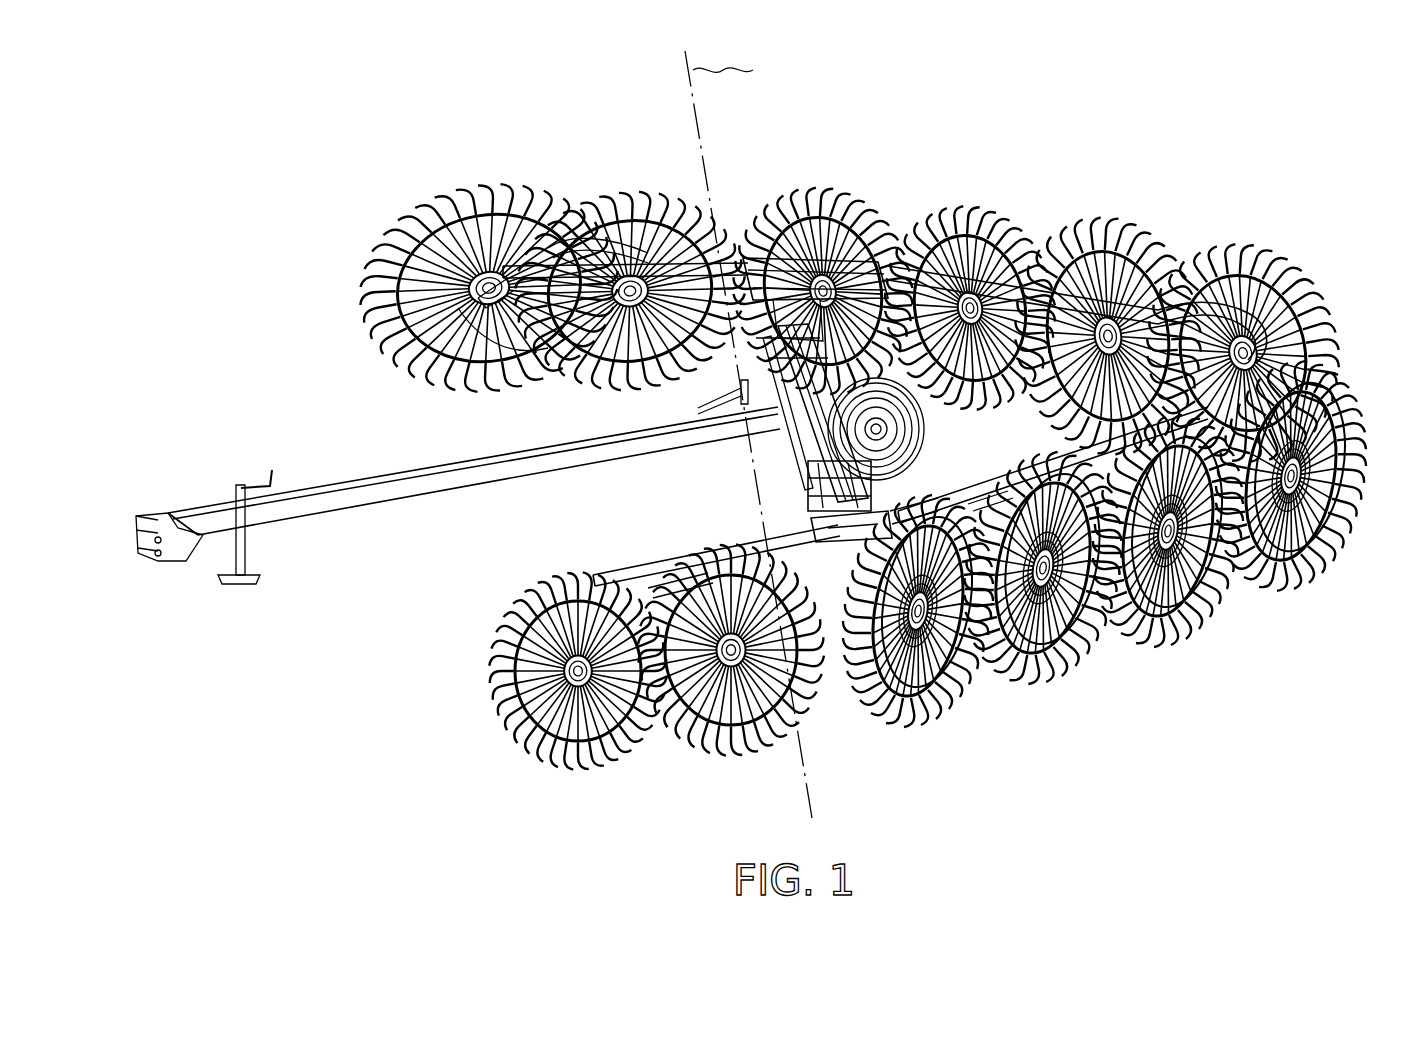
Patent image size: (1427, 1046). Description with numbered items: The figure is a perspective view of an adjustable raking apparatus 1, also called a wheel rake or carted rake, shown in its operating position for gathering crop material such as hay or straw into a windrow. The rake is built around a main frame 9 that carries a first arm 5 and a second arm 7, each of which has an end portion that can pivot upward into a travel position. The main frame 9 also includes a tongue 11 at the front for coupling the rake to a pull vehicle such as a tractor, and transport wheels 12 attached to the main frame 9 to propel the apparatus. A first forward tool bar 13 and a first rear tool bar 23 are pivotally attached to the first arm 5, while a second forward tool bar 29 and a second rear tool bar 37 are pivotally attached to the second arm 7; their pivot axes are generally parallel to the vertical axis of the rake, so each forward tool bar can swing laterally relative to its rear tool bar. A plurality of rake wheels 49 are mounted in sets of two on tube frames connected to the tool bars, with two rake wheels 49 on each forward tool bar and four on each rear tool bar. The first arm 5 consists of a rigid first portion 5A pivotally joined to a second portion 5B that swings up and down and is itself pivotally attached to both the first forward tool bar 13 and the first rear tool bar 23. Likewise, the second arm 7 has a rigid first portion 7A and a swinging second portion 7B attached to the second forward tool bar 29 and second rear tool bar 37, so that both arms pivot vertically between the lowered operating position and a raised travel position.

The raking apparatus 1 is at (1327, 200).
The rake wheels 49 is at (440, 178).
The tongue 11 is at (323, 470).
The second portion of second arm 7B is at (728, 238).
The second forward tool bar 29 is at (572, 338).
The second arm 7 is at (866, 228).
The first portion of second arm 7A is at (937, 200).
The second rear tool bar 37 is at (1005, 255).
The main frame 9 is at (757, 427).
The first portion of first arm 5A is at (807, 437).
The first arm 5 is at (802, 482).
The second portion of first arm 5B is at (856, 560).
The transport wheels 12 is at (923, 397).
The first rear tool bar 23 is at (1082, 450).
The first forward tool bar 13 is at (681, 560).